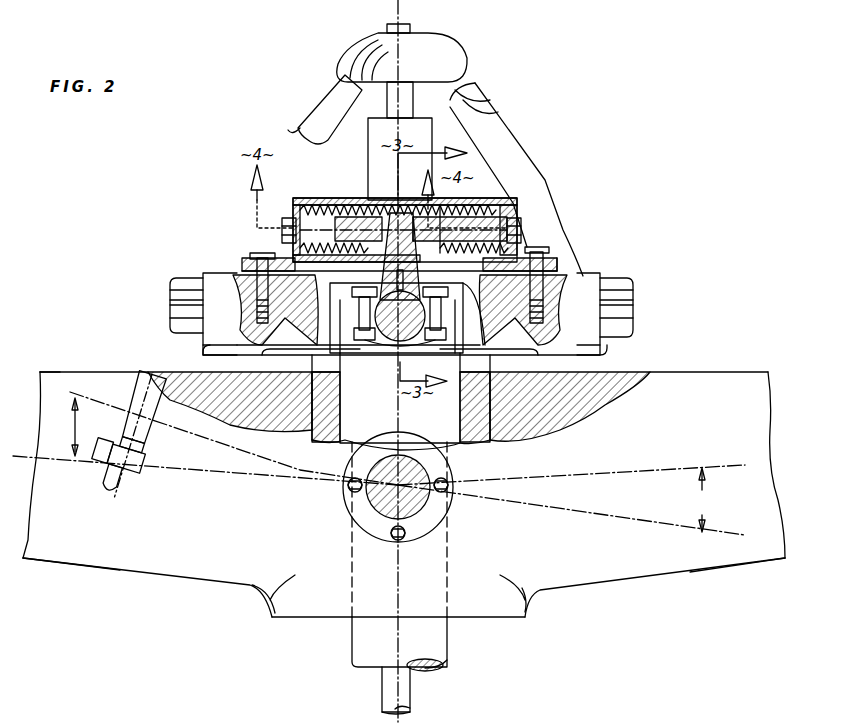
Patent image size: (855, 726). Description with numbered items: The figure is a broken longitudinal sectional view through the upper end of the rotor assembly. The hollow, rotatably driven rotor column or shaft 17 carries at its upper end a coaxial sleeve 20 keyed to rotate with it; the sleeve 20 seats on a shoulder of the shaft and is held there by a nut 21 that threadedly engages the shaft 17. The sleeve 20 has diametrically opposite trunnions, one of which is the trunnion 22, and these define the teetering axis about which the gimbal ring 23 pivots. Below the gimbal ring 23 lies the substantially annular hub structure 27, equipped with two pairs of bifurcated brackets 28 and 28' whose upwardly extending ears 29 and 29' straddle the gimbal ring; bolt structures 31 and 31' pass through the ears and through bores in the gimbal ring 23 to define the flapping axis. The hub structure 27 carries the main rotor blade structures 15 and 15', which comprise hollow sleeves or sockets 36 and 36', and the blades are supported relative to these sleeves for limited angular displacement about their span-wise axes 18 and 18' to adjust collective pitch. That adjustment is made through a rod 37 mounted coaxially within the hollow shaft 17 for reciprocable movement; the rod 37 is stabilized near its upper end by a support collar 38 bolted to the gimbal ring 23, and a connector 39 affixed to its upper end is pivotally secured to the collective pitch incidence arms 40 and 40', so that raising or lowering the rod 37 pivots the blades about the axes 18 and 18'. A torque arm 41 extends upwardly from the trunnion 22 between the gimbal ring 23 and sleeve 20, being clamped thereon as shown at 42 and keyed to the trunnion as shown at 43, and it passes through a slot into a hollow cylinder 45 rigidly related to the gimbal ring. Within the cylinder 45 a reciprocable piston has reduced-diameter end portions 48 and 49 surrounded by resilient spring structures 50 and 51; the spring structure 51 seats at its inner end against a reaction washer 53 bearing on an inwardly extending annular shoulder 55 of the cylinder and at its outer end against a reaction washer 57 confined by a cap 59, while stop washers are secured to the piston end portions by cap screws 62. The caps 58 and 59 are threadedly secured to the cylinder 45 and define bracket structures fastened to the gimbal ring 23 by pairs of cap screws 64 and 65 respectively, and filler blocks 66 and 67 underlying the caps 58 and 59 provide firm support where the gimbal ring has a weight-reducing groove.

The main rotor blade structure 15 is at (404, 477).
The main rotor blade structure 15' is at (47, 354).
The rotor column or shaft 17 is at (448, 640).
The span-wise axis 18 is at (571, 500).
The span-wise axis 18' is at (205, 438).
The sleeve 20 is at (470, 427).
The nut 21 is at (448, 330).
The trunnion 22 is at (388, 300).
The gimbal ring 23 is at (590, 300).
The hub structure 27 is at (530, 608).
The bifurcated bracket 28 is at (573, 403).
The bifurcated bracket 28' is at (230, 396).
The ear 29 is at (634, 307).
The ear 29' is at (166, 305).
The bolt structure 31 is at (633, 327).
The bolt structure 31' is at (166, 320).
The hollow sleeve or socket 36 is at (729, 582).
The hollow sleeve or socket 36' is at (71, 585).
The rod 37 is at (412, 25).
The support collar 38 is at (422, 116).
The connector 39 is at (458, 52).
The collective pitch incidence arm 40 is at (516, 179).
The incidence arm 40' is at (315, 109).
The torque arm 41 is at (385, 178).
The clamp 42 is at (312, 382).
The key 43 is at (360, 287).
The hollow sleeve or cylinder 45 is at (447, 212).
The piston end portion 48 is at (300, 198).
The piston end portion 49 is at (470, 223).
The spring structure 50 is at (335, 200).
The spring structure 51 is at (515, 218).
The reaction washer 53 is at (478, 290).
The annular shoulder 55 is at (408, 340).
The reaction washer 57 is at (530, 250).
The cap 58 is at (242, 258).
The cap 59 is at (480, 232).
The cap screw 62 is at (283, 228).
The cap screw 64 is at (257, 265).
The cap screw 65 is at (545, 290).
The filler block 66 is at (210, 300).
The filler block 67 is at (590, 290).